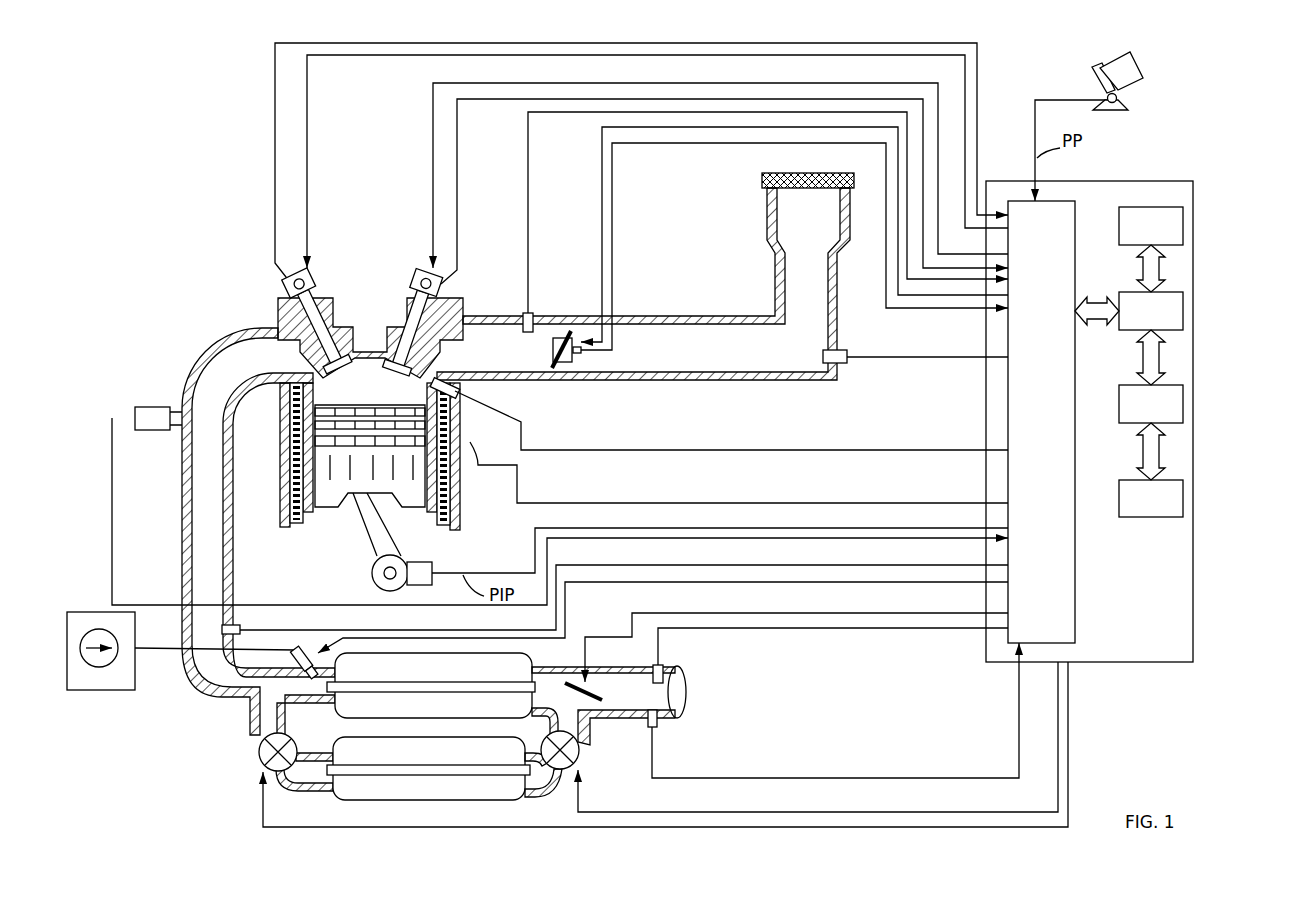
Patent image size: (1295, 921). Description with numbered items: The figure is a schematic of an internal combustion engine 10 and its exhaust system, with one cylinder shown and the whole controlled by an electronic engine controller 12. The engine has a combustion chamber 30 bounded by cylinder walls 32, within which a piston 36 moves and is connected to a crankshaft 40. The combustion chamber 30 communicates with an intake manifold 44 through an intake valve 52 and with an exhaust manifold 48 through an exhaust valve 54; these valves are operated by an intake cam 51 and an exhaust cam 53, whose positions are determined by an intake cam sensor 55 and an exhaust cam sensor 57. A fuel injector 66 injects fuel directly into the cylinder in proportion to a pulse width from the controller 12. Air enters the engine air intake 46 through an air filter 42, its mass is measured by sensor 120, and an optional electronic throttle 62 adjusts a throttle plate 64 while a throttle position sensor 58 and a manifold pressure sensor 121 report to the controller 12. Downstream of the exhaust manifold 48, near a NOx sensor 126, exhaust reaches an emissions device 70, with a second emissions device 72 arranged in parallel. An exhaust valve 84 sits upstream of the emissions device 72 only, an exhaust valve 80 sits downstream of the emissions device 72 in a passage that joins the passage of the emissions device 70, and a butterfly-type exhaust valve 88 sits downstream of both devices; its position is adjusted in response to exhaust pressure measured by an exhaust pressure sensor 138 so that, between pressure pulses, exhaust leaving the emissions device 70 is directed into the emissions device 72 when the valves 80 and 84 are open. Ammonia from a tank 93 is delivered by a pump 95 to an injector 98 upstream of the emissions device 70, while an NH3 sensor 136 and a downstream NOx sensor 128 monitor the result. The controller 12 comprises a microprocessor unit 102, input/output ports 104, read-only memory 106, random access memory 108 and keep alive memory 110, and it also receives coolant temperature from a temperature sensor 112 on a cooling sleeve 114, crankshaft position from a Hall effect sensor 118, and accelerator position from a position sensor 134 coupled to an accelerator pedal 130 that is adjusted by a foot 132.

The internal combustion engine 10 is at (218, 256).
The electronic engine controller 12 is at (1193, 182).
The combustion chamber 30 is at (300, 470).
The cylinder walls 32 is at (318, 512).
The piston 36 is at (355, 480).
The crankshaft 40 is at (372, 580).
The air filter 42 is at (822, 189).
The intake manifold 44 is at (517, 361).
The engine air intake 46 is at (639, 361).
The exhaust manifold 48 is at (261, 366).
The intake cam 51 is at (413, 264).
The intake valve 52 is at (418, 368).
The exhaust cam 53 is at (318, 264).
The exhaust valve 54 is at (335, 362).
The intake cam sensor 55 is at (442, 296).
The exhaust cam sensor 57 is at (297, 284).
The throttle position sensor 58 is at (581, 355).
The electronic throttle 62 is at (534, 319).
The throttle plate 64 is at (568, 336).
The fuel injector 66 is at (453, 395).
The emissions device 70 is at (338, 718).
The emissions device 72 is at (515, 800).
The exhaust valve 80 is at (579, 755).
The exhaust valve 84 is at (259, 760).
The exhaust valve 88 is at (583, 683).
The tank 93 is at (115, 692).
The pump 95 is at (97, 630).
The injector 98 is at (649, 630).
The microprocessor unit 102 is at (1183, 311).
The input/output ports 104 is at (1075, 203).
The read-only memory 106 is at (1183, 222).
The random access memory 108 is at (1183, 403).
The keep alive memory 110 is at (1183, 493).
The temperature sensor 112 is at (468, 450).
The cooling sleeve 114 is at (455, 505).
The Hall effect sensor 118 is at (432, 565).
The air mass sensor 120 is at (840, 363).
The pressure sensor 121 is at (523, 313).
The NOx sensor 126 is at (135, 412).
The NOx sensor 128 is at (662, 665).
The accelerator pedal 130 is at (1098, 72).
The foot 132 is at (1142, 64).
The position sensor 134 is at (1122, 100).
The NH3 sensor 136 is at (657, 727).
The exhaust pressure sensor 138 is at (240, 628).